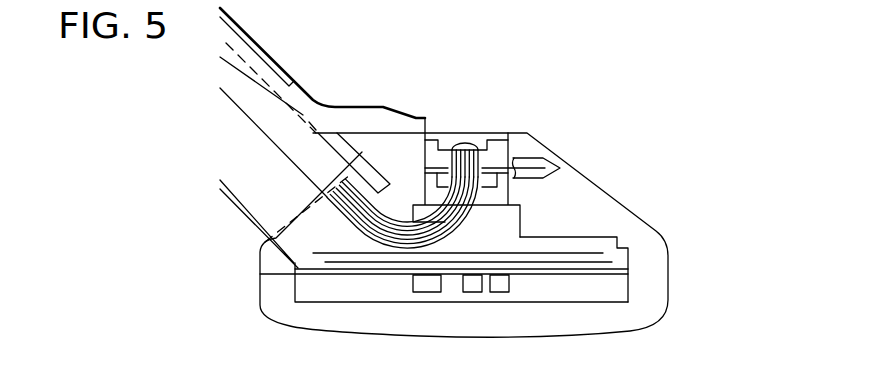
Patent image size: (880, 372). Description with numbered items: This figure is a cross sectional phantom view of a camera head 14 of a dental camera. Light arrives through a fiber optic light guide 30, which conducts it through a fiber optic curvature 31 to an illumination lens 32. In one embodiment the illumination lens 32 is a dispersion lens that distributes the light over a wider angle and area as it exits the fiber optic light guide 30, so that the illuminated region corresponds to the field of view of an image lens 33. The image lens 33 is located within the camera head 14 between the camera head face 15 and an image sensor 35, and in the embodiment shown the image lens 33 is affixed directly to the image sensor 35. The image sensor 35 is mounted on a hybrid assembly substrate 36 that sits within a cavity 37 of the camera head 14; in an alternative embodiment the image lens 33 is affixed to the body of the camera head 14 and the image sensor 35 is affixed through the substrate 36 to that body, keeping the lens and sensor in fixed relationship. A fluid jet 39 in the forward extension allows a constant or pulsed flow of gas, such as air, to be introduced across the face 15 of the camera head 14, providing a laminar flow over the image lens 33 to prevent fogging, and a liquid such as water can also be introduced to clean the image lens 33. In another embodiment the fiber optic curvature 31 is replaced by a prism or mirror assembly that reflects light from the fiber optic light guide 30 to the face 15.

The camera head 14 is at (649, 177).
The camera head face 15 is at (480, 135).
The fiber optic light guide 30 is at (320, 167).
The fiber optic curvature 31 is at (357, 208).
The illumination lens 32 is at (470, 145).
The image lens 33 is at (500, 192).
The image sensor 35 is at (628, 247).
The substrate 36 is at (632, 268).
The cavity 37 is at (617, 288).
The fluid jet 39 is at (430, 127).